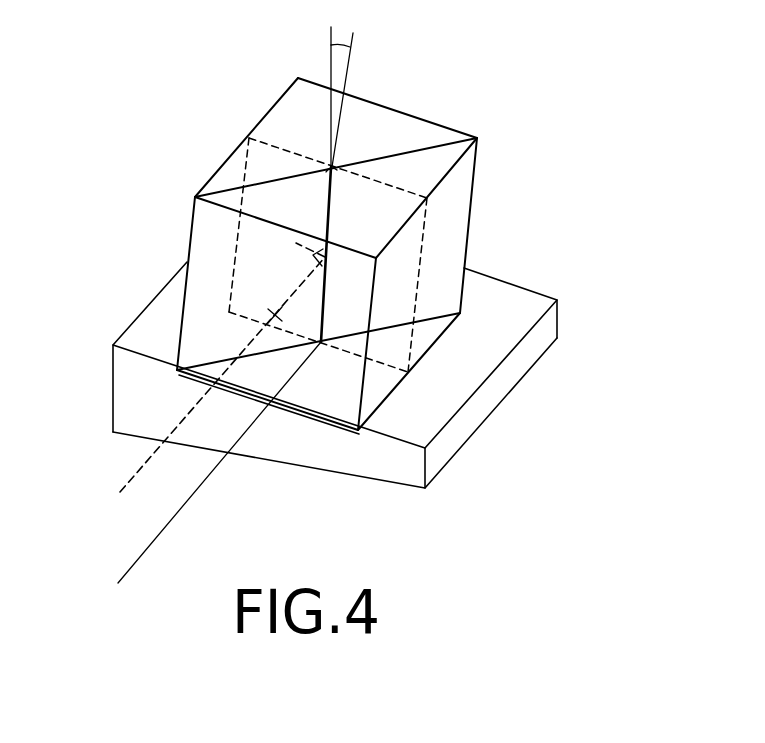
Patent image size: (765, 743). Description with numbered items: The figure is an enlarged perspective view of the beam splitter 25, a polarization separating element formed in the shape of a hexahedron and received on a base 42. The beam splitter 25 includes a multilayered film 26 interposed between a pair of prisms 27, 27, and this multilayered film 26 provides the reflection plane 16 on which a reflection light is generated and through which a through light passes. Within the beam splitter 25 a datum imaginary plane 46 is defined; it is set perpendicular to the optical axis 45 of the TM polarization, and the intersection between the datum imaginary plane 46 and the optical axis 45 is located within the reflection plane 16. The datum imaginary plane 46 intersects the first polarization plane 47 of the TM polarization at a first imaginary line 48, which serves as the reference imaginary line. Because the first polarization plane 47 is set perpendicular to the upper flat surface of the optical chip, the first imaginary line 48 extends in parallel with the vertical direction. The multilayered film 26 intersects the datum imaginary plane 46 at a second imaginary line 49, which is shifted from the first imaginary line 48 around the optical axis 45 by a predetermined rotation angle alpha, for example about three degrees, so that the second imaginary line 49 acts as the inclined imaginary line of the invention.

The reflection plane 16 is at (344, 238).
The beam splitter 25 is at (425, 123).
The multilayered film 26 is at (197, 196).
The prisms 27 is at (461, 133).
The base 42 is at (557, 322).
The optical axis 45 is at (128, 479).
The datum imaginary plane 46 is at (256, 139).
The first polarization plane 47 is at (184, 511).
The first imaginary line 48 is at (328, 165).
The second imaginary line 49 is at (331, 214).